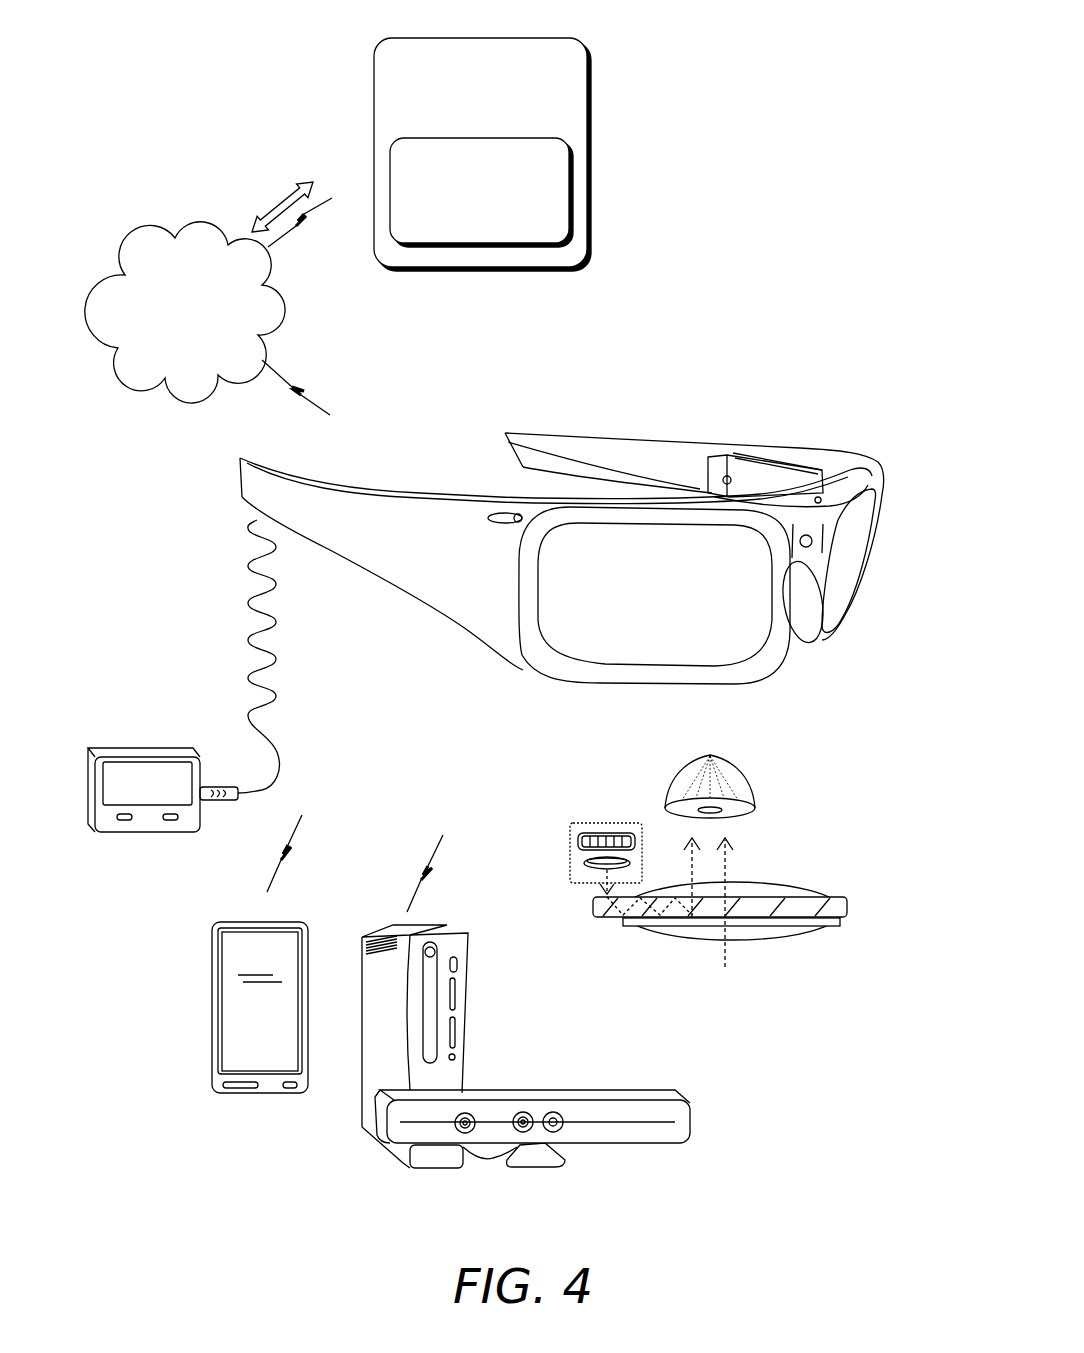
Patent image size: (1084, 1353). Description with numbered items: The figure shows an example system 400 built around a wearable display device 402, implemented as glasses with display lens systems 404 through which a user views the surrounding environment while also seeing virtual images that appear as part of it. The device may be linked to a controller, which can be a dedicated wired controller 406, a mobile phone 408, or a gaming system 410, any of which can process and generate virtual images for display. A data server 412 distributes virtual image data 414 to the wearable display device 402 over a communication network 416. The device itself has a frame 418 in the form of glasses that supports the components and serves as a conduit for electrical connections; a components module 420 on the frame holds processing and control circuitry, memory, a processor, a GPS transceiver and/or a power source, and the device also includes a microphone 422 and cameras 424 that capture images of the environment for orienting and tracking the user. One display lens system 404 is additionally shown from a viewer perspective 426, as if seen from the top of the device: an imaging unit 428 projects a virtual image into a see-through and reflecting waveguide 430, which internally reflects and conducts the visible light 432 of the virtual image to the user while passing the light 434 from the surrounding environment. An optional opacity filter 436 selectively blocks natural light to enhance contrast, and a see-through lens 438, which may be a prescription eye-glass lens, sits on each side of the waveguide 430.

The system 400 is at (808, 60).
The wearable display device 402 is at (742, 352).
The display lens system 404 is at (713, 633).
The controller 406 is at (166, 866).
The mobile phone 408 is at (281, 1128).
The gaming system 410 is at (544, 1200).
The data server 412 is at (424, 89).
The virtual image data 414 is at (463, 226).
The communication network 416 is at (113, 286).
The frame 418 is at (441, 577).
The components module 420 is at (820, 467).
The microphone 422 is at (810, 547).
The camera 424 is at (492, 510).
The viewer perspective 426 is at (622, 410).
The imaging unit 428 is at (592, 822).
The see-through and reflecting waveguide 430 is at (805, 917).
The visible light 432 is at (662, 845).
The light from the surrounding environment 434 is at (744, 996).
The opacity filter 436 is at (743, 925).
The see-through lens 438 is at (793, 883).